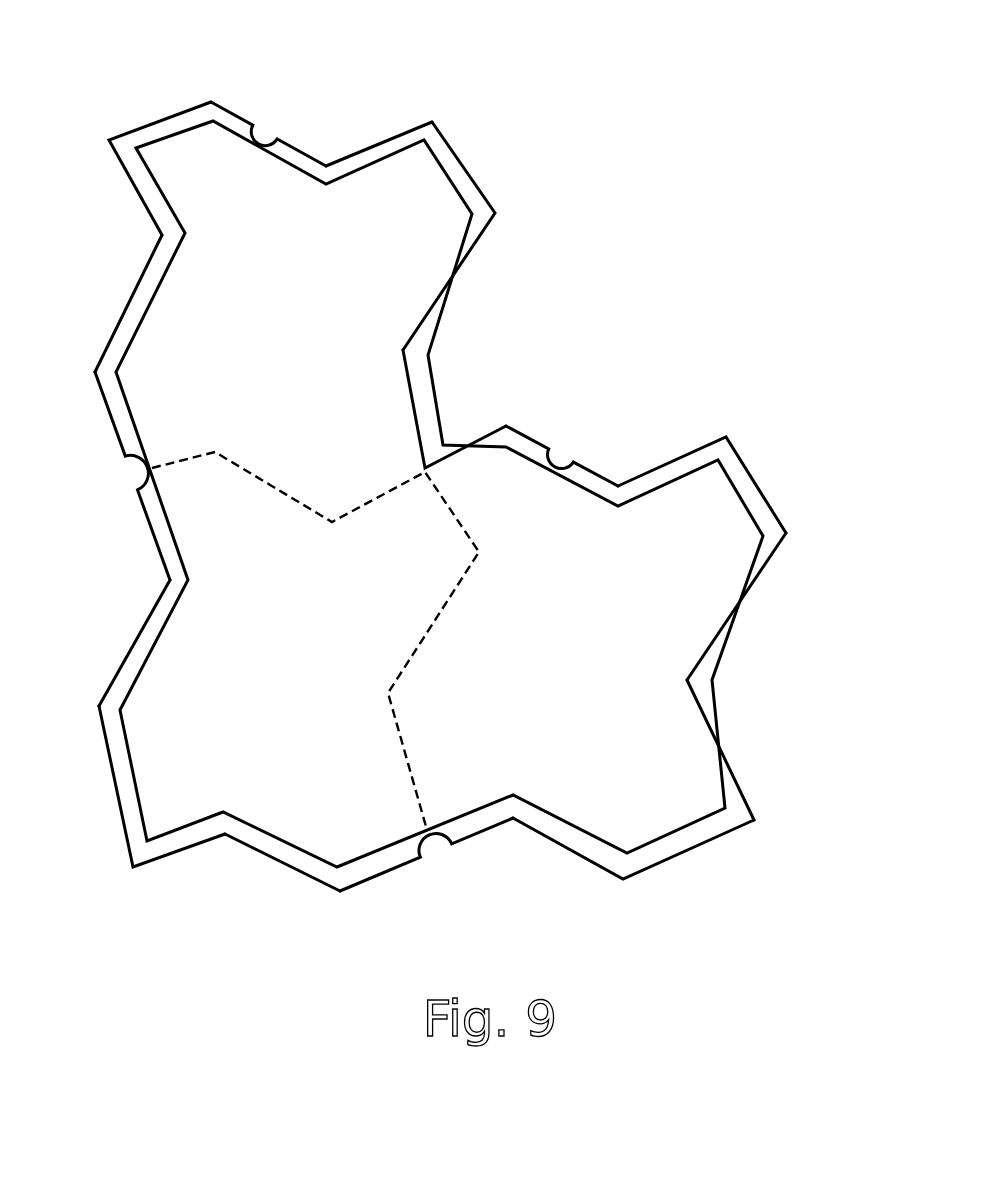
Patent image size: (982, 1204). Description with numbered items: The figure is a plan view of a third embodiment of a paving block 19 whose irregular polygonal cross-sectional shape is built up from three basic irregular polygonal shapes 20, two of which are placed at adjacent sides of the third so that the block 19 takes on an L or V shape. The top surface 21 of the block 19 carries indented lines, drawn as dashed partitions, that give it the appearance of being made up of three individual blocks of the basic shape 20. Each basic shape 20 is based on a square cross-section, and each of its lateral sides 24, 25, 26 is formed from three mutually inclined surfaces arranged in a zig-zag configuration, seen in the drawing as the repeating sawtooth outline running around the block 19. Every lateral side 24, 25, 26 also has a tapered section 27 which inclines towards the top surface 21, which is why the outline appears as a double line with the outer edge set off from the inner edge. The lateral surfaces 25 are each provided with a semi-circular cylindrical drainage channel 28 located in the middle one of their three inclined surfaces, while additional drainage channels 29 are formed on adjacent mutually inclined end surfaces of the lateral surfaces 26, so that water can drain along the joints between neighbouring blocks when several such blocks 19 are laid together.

The paving block 19 is at (605, 295).
The basic irregular polygonal shape 20 is at (192, 292).
The top surface 21 is at (430, 197).
The lateral side 24 is at (458, 288).
The lateral side 25 is at (183, 108).
The lateral side 26 is at (100, 345).
The tapered section 27 is at (410, 135).
The semi-circular cylindrical drainage channel 28 is at (264, 131).
The additional drainage channel 29 is at (138, 478).